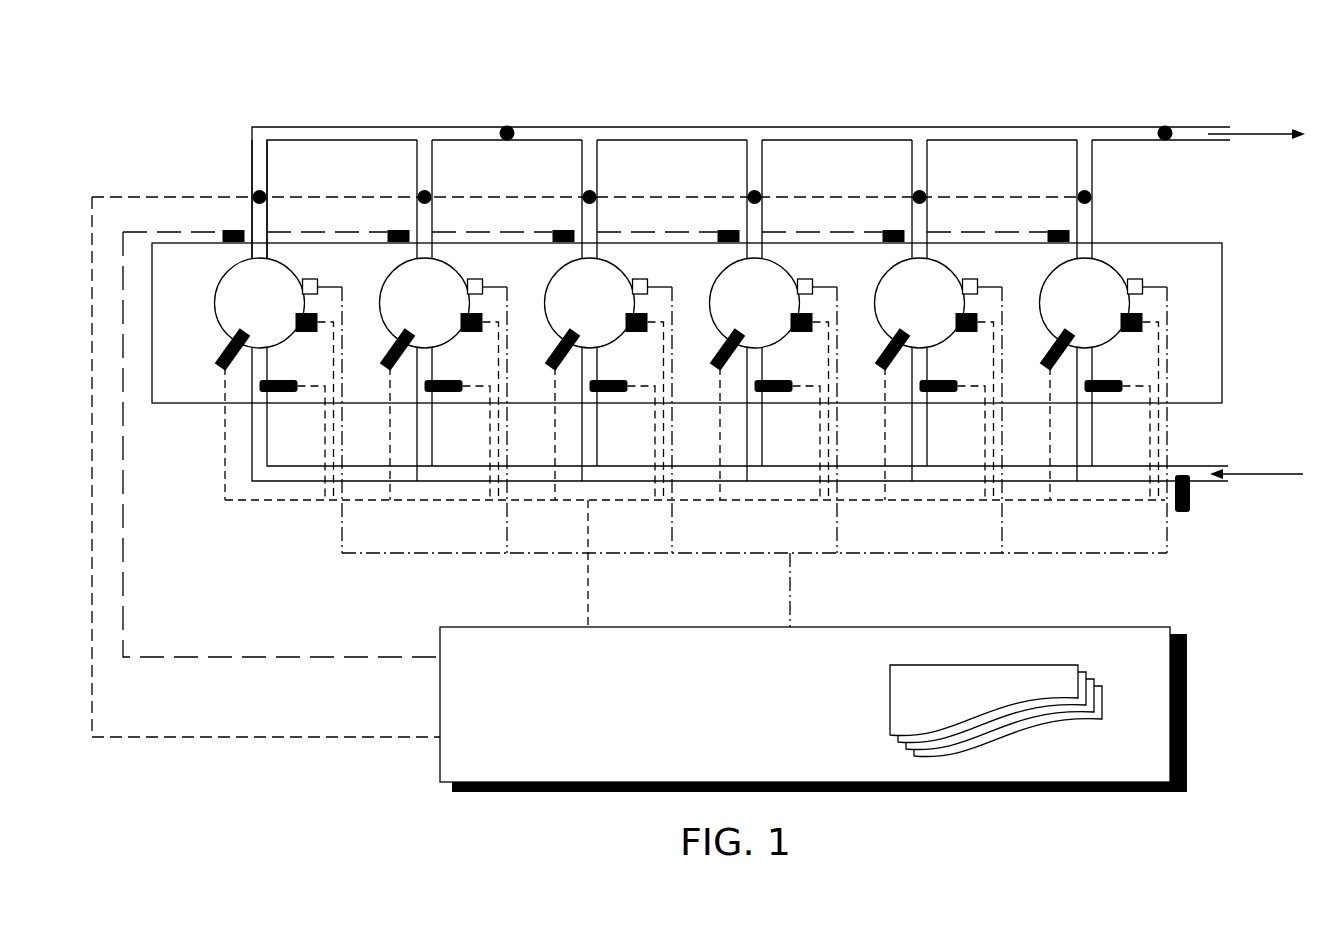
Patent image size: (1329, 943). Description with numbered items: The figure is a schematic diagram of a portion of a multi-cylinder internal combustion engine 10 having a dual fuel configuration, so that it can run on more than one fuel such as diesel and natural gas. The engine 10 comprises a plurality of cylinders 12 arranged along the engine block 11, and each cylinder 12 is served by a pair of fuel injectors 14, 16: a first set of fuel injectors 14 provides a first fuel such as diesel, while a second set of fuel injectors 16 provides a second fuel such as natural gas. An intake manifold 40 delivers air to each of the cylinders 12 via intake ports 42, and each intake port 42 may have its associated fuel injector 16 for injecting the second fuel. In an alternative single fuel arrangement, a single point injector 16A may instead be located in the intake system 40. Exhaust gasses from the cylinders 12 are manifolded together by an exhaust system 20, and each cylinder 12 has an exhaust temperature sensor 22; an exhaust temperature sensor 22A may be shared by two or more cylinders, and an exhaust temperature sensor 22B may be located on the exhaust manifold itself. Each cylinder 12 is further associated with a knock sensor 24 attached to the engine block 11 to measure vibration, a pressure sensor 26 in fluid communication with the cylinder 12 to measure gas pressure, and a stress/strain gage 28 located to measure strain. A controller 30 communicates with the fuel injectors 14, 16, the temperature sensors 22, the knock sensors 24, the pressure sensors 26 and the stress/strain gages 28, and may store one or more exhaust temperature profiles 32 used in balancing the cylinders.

The multi-cylinder internal combustion engine 10 is at (190, 125).
The engine block 11 is at (1223, 322).
The cylinder 12 is at (246, 316).
The fuel injector 14 is at (226, 347).
The fuel injector 16 is at (292, 378).
The single point injector 16A is at (1192, 496).
The exhaust system 20 is at (1200, 108).
The exhaust temperature sensor 22 is at (252, 192).
The exhaust temperature sensor 22A is at (501, 128).
The exhaust temperature sensor 22B is at (1159, 128).
The knock sensor 24 is at (220, 233).
The pressure sensor 26 is at (320, 282).
The stress/strain gage 28 is at (320, 318).
The controller 30 is at (813, 715).
The exhaust temperature profile 32 is at (942, 697).
The intake manifold 40 is at (1210, 452).
The intake port 42 is at (278, 440).